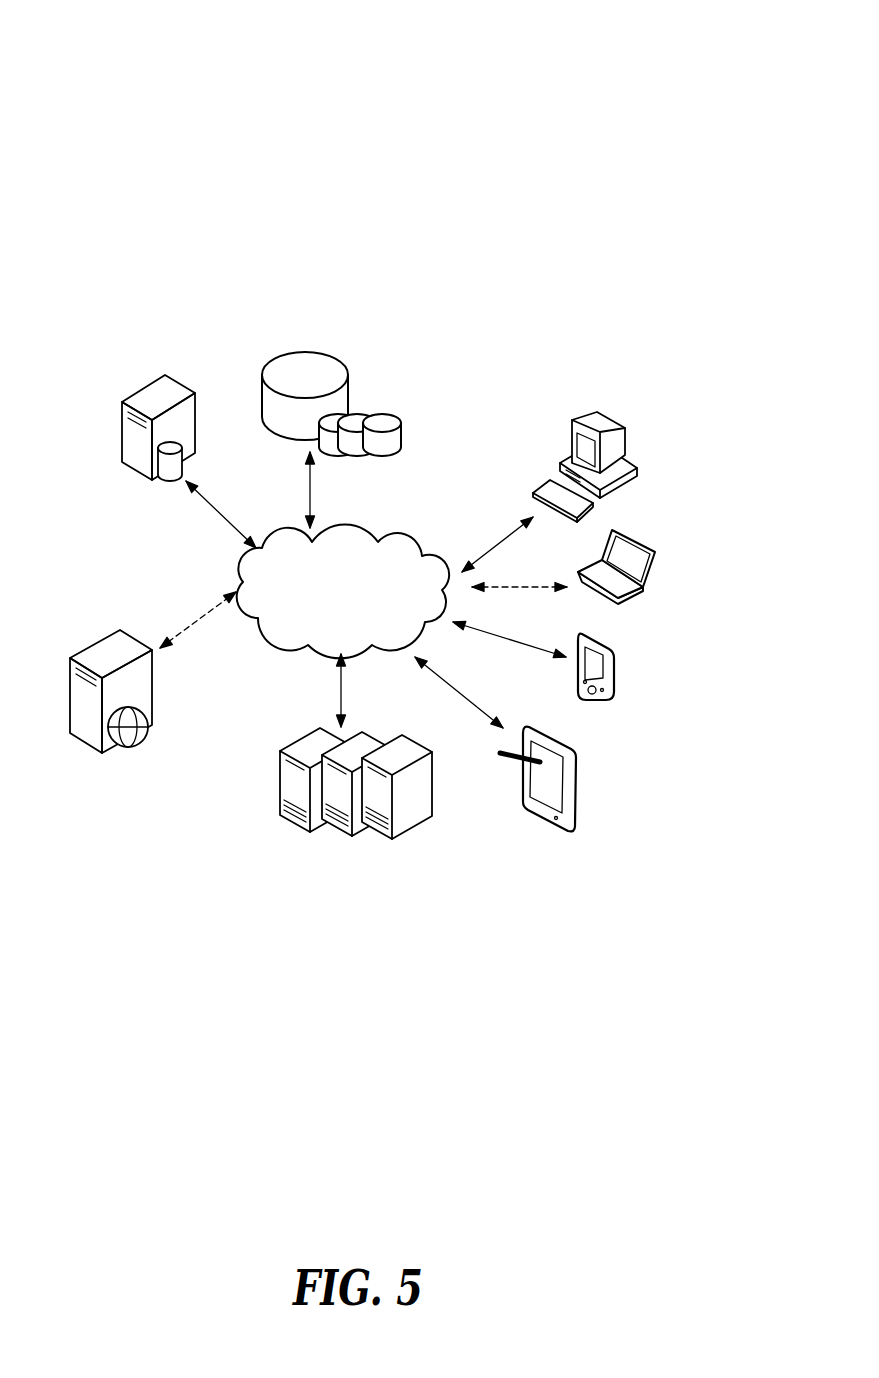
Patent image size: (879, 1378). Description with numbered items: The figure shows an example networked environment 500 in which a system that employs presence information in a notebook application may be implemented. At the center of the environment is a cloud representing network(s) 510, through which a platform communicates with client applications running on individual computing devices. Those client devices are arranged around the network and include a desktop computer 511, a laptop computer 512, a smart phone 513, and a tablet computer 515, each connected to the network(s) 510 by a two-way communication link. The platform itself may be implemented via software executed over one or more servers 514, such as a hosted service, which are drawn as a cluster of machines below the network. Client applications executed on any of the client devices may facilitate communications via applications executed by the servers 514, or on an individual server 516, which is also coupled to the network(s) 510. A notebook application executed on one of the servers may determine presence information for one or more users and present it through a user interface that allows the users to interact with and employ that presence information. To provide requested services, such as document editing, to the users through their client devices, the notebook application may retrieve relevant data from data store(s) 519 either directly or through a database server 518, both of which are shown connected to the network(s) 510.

The networked environment 500 is at (632, 72).
The network(s) 510 is at (347, 517).
The desktop computer 511 is at (622, 407).
The laptop computer 512 is at (655, 528).
The smart phone 513 is at (628, 640).
The servers 514 is at (305, 733).
The tablet computer 515 is at (592, 756).
The individual server 516 is at (90, 640).
The database server 518 is at (160, 488).
The data store(s) 519 is at (318, 332).